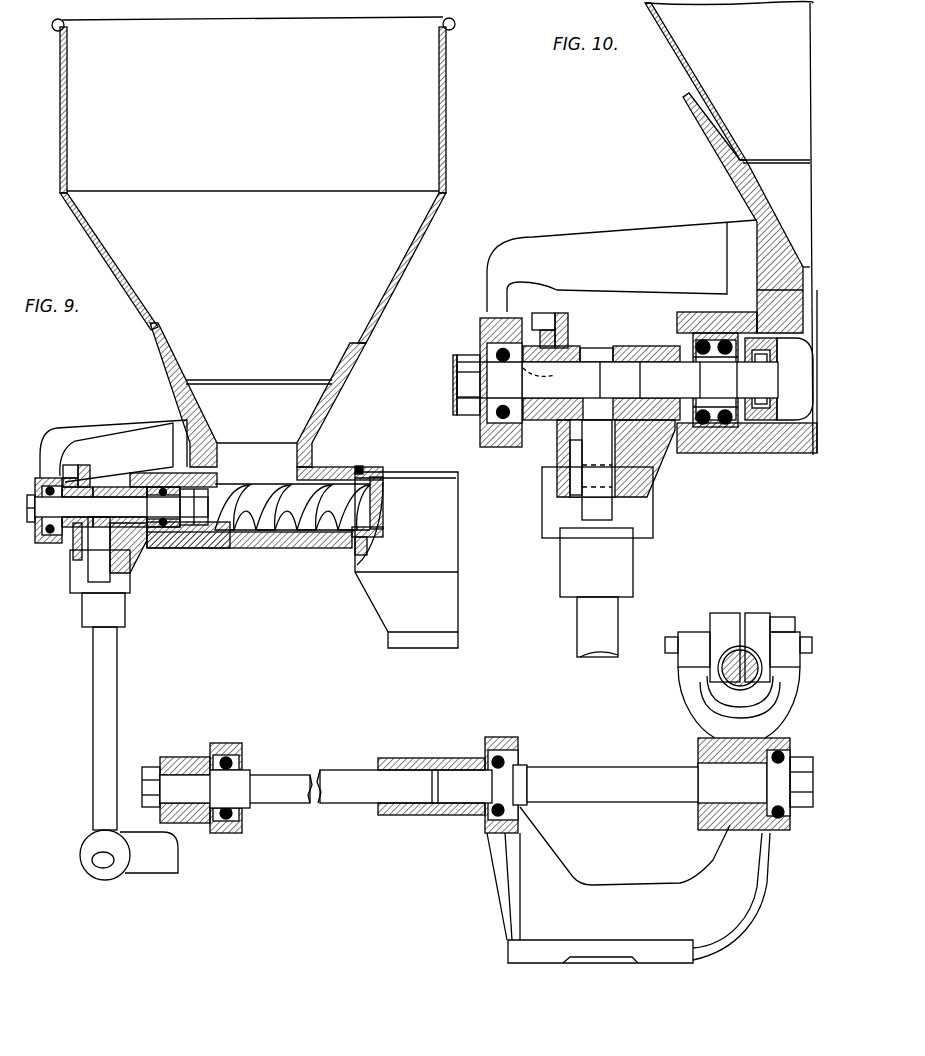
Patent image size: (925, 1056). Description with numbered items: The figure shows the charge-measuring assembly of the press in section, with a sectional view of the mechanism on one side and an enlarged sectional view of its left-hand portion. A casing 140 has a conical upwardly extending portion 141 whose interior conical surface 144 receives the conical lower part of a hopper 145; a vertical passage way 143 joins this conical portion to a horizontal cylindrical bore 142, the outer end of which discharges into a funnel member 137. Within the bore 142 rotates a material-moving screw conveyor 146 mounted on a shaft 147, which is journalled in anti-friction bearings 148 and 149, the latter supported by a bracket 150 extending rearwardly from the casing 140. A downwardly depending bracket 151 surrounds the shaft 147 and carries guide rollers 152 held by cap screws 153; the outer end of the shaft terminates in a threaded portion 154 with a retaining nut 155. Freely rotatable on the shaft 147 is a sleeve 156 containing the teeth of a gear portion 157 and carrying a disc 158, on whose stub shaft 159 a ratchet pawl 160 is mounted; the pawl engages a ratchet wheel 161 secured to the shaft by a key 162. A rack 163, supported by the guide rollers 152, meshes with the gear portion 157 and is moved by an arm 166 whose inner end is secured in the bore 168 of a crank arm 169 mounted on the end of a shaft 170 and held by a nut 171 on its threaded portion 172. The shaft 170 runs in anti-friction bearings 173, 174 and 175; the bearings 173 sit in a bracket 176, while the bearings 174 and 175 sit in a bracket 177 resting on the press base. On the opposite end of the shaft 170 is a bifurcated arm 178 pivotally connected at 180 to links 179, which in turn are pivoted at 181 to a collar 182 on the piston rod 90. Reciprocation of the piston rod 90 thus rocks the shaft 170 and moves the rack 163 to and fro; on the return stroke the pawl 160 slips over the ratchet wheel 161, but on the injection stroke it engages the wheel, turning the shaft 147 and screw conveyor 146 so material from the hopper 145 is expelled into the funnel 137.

In FIG. 10, the piston rod 90 is at (720, 676).
In FIG. 9, the funnel member 137 is at (447, 527).
In FIG. 9, the casing 140 is at (292, 549).
In FIG. 10, the casing 140 is at (776, 455).
In FIG. 9, the conical upwardly extending portion 141 is at (350, 381).
In FIG. 10, the conical upwardly extending portion 141 is at (692, 114).
In FIG. 9, the horizontal cylindrical bore 142 is at (338, 470).
In FIG. 10, the horizontal cylindrical bore 142 is at (803, 285).
In FIG. 9, the vertical passage way 143 is at (290, 457).
In FIG. 10, the vertical passage way 143 is at (770, 280).
In FIG. 9, the interior conical surface 144 is at (333, 385).
In FIG. 10, the interior conical surface 144 is at (755, 192).
In FIG. 9, the hopper 145 is at (446, 97).
In FIG. 10, the hopper 145 is at (676, 61).
In FIG. 9, the material-moving screw conveyor 146 is at (255, 488).
In FIG. 10, the material-moving screw conveyor 146 is at (805, 408).
In FIG. 9, the shaft 147 is at (213, 548).
In FIG. 10, the shaft 147 is at (773, 382).
In FIG. 10, the anti-friction bearings 148 is at (705, 410).
In FIG. 10, the anti-friction bearings 149 is at (482, 326).
In FIG. 9, the bracket 150 is at (133, 430).
In FIG. 10, the bracket 150 is at (657, 234).
In FIG. 9, the downwardly depending bracket 151 is at (135, 550).
In FIG. 10, the downwardly depending bracket 151 is at (660, 452).
In FIG. 9, the guide rollers 152 is at (97, 570).
In FIG. 10, the guide rollers 152 is at (580, 484).
In FIG. 10, the cap screws 153 is at (572, 465).
In FIG. 9, the threaded portion 154 is at (30, 524).
In FIG. 10, the threaded portion 154 is at (462, 395).
In FIG. 9, the retaining nut 155 is at (38, 480).
In FIG. 10, the retaining nut 155 is at (455, 355).
In FIG. 9, the sleeve 156 is at (108, 467).
In FIG. 10, the sleeve 156 is at (628, 355).
In FIG. 9, the gear portion 157 is at (95, 487).
In FIG. 10, the gear portion 157 is at (590, 352).
In FIG. 9, the disc 158 is at (83, 465).
In FIG. 10, the disc 158 is at (561, 313).
In FIG. 9, the stub shaft 159 is at (62, 470).
In FIG. 10, the stub shaft 159 is at (546, 313).
In FIG. 9, the ratchet pawl 160 is at (70, 465).
In FIG. 10, the ratchet pawl 160 is at (540, 313).
In FIG. 10, the ratchet wheel 161 is at (500, 345).
In FIG. 10, the key 162 is at (548, 370).
In FIG. 9, the rack 163 is at (95, 552).
In FIG. 10, the rack 163 is at (585, 432).
In FIG. 9, the arm 166 is at (93, 662).
In FIG. 10, the arm 166 is at (577, 632).
In FIG. 9, the bore 168 is at (100, 862).
In FIG. 9, the crank arm 169 is at (152, 866).
In FIG. 9, the shaft 170 is at (278, 774).
In FIG. 10, the shaft 170 is at (507, 786).
In FIG. 9, the nut 171 is at (158, 758).
In FIG. 9, the threaded portion 172 is at (140, 782).
In FIG. 9, the anti-friction bearings 173 is at (226, 748).
In FIG. 10, the anti-friction bearing 174 is at (500, 740).
In FIG. 10, the anti-friction bearing 175 is at (795, 740).
In FIG. 9, the bracket 176 is at (243, 826).
In FIG. 10, the bracket 177 is at (575, 884).
In FIG. 10, the bifurcated arm 178 is at (705, 727).
In FIG. 10, the links 179 is at (785, 617).
In FIG. 10, the pivotal connection 180 is at (690, 632).
In FIG. 10, the pivotal connection 181 is at (672, 637).
In FIG. 10, the collar 182 is at (757, 614).